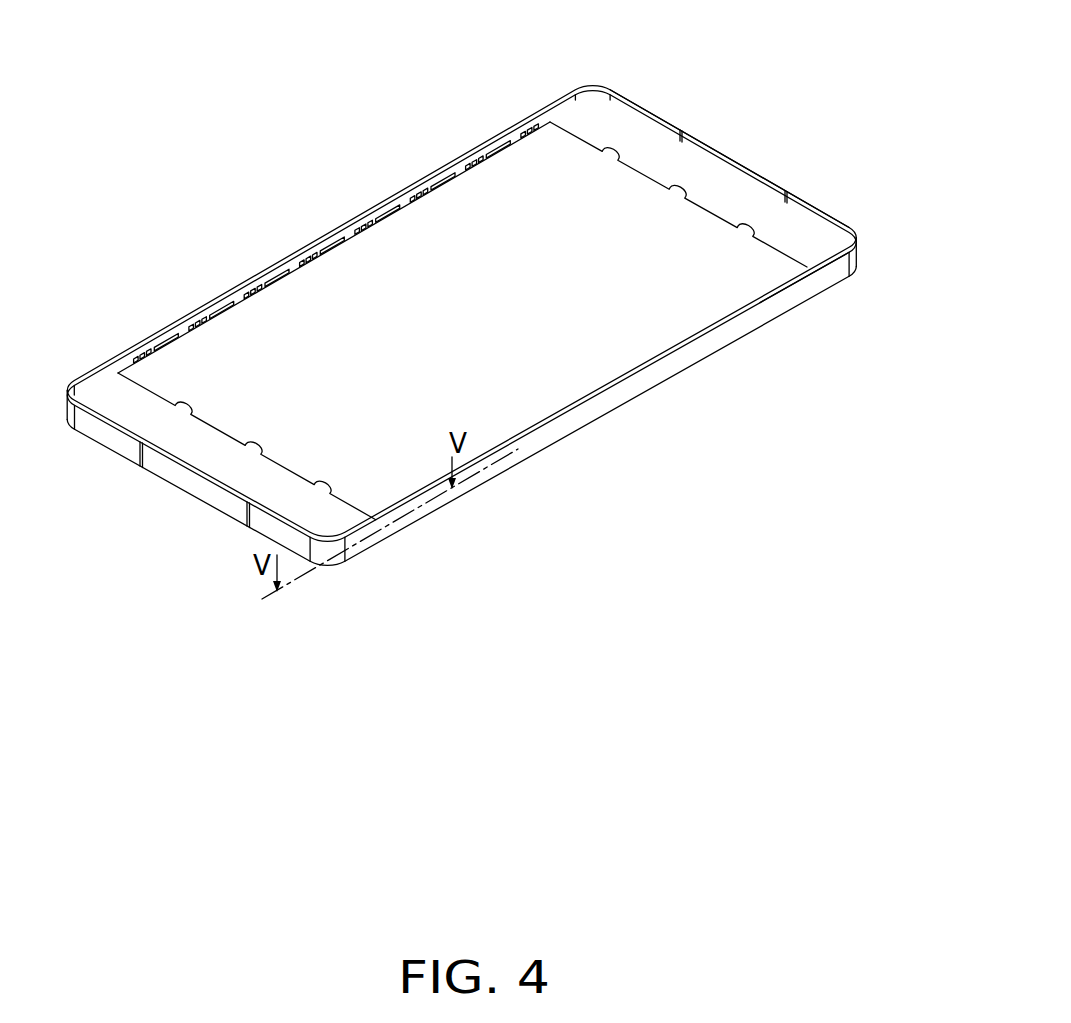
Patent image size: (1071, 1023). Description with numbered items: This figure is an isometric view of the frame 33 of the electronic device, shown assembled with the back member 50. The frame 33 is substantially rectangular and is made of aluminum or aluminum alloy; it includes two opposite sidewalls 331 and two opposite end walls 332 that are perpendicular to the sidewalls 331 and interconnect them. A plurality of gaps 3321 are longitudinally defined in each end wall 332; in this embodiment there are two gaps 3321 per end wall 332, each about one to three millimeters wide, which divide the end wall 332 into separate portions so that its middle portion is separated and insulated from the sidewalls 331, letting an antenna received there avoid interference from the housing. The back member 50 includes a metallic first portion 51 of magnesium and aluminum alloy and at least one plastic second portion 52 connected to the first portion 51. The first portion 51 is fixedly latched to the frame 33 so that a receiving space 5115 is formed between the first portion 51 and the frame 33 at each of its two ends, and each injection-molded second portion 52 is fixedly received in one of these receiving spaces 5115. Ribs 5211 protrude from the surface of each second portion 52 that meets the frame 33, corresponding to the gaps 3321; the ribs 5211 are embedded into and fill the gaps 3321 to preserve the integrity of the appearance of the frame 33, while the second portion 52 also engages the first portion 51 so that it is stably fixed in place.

The frame 33 is at (638, 94).
The sidewall 331 is at (584, 410).
The end wall 332 is at (743, 160).
The gap 3321 is at (787, 190).
The rib 5211 is at (682, 127).
The receiving space 5115 is at (106, 388).
The back member 50 is at (495, 321).
The first portion 51 is at (674, 285).
The second portion 52 is at (812, 295).